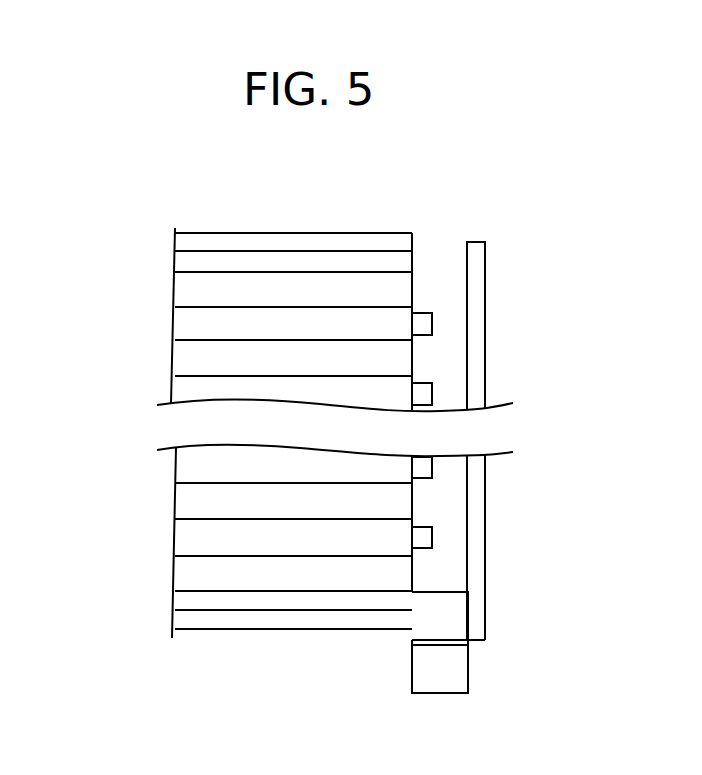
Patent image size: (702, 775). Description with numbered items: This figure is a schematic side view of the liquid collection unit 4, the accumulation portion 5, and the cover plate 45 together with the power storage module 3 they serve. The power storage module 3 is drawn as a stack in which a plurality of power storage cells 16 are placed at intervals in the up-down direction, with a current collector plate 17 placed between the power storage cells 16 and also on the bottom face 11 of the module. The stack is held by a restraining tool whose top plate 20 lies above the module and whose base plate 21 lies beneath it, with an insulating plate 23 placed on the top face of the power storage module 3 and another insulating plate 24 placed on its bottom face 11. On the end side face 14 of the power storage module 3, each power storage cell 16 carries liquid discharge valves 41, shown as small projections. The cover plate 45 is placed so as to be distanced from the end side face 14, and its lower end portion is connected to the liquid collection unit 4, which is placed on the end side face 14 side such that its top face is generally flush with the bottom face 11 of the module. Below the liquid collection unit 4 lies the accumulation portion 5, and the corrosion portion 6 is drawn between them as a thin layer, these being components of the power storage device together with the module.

The power storage module 3 is at (92, 282).
The liquid collection unit 4 is at (458, 608).
The accumulation portion 5 is at (458, 673).
The corrosion portion 6 is at (462, 641).
The bottom face 11 is at (316, 590).
The end side face 14 is at (436, 231).
The power storage cell 16 is at (198, 326).
The current collector plate 17 is at (198, 294).
The top plate 20 is at (258, 243).
The base plate 21 is at (215, 620).
The insulating plate 23 is at (198, 262).
The insulating plate 24 is at (198, 605).
The liquid discharge valve 41 is at (433, 318).
The cover plate 45 is at (472, 364).